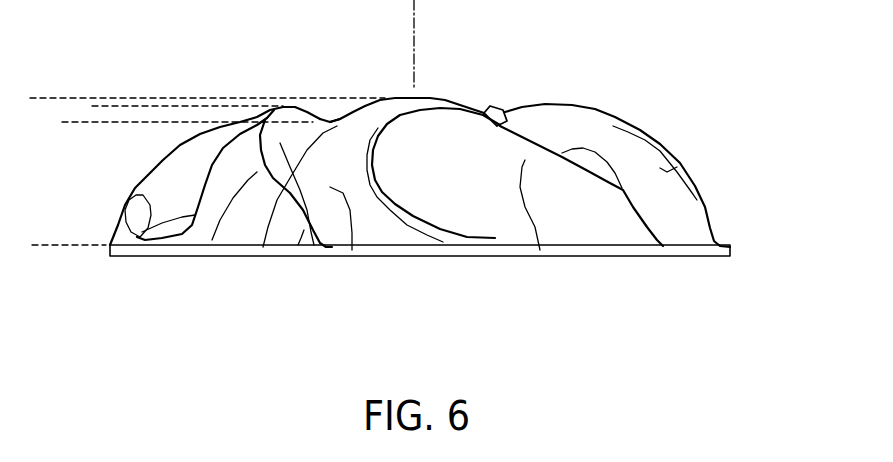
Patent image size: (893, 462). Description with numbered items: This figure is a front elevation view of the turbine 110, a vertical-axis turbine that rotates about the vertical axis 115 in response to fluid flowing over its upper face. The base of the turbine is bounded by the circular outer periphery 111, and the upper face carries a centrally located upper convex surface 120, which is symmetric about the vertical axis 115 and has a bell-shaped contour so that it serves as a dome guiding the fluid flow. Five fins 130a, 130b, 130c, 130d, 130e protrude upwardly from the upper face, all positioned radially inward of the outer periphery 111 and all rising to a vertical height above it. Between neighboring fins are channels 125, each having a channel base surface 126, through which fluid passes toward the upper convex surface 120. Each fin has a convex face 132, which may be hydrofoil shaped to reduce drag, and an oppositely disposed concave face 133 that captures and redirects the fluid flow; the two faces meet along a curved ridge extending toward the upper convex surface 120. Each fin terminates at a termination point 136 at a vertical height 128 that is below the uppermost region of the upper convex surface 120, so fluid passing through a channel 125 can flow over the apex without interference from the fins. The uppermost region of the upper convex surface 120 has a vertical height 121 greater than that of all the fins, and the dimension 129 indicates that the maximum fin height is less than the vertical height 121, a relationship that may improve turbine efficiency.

The turbine 110 is at (680, 62).
The outer periphery 111 is at (733, 247).
The vertical axis 115 is at (415, 43).
The upper convex surface 120 is at (432, 98).
The vertical height 121 is at (43, 108).
The channel 125 is at (367, 208).
The channel base surface 126 is at (352, 250).
The vertical height 128 is at (72, 143).
The dimension 129 is at (122, 150).
The fin 130a is at (263, 247).
The fin 130b is at (143, 177).
The fin 130c is at (493, 100).
The fin 130d is at (634, 123).
The fin 130e is at (622, 190).
The convex face 132 is at (212, 240).
The concave face 133 is at (145, 200).
The termination point 136 is at (330, 120).